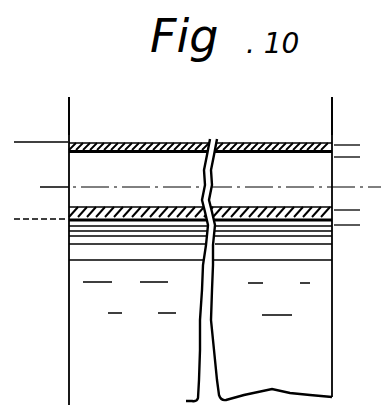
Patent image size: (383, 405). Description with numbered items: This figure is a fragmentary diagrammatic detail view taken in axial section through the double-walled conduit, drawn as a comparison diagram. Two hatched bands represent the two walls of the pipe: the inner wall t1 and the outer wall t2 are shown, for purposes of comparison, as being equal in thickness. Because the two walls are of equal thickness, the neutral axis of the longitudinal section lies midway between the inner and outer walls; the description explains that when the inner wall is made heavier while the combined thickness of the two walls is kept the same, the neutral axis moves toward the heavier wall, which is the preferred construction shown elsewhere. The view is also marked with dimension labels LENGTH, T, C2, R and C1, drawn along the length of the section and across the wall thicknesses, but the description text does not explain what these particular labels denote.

The length of the tube section LENGTH is at (332, 105).
The overall wall thickness T is at (23, 142).
The outer layer thickness dimension C2 is at (52, 142).
The reference centerline R is at (54, 187).
The inner layer thickness dimension C1 is at (52, 187).
The outer wall t2 is at (348, 135).
The inner wall t1 is at (348, 200).